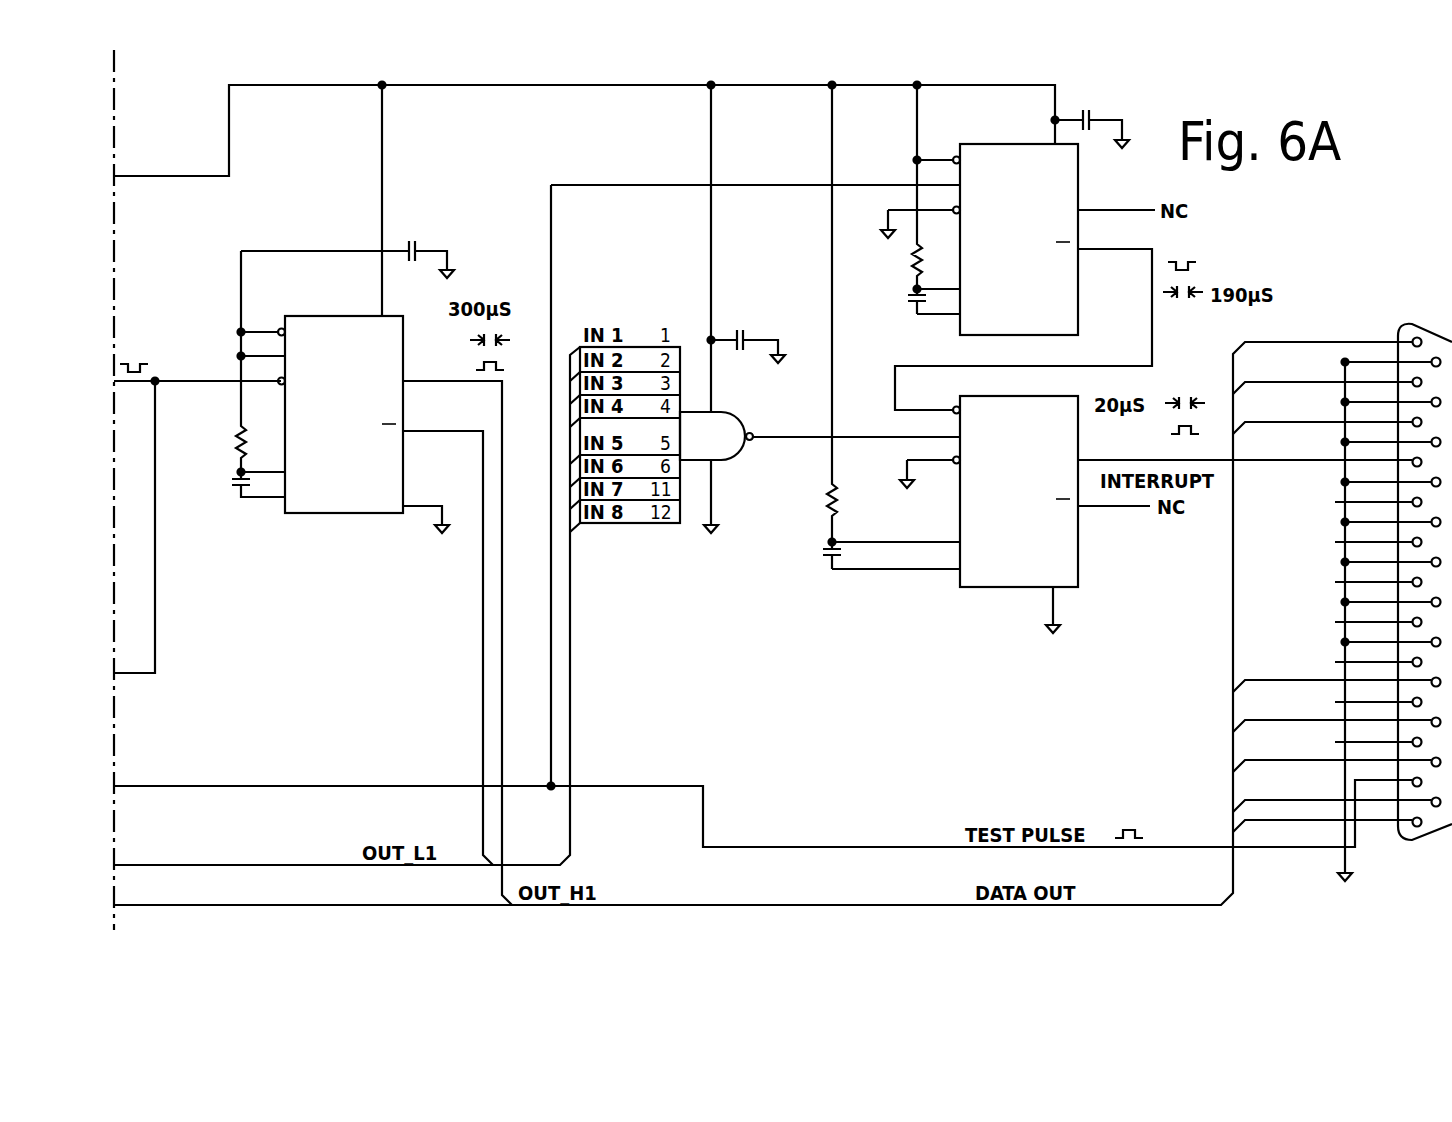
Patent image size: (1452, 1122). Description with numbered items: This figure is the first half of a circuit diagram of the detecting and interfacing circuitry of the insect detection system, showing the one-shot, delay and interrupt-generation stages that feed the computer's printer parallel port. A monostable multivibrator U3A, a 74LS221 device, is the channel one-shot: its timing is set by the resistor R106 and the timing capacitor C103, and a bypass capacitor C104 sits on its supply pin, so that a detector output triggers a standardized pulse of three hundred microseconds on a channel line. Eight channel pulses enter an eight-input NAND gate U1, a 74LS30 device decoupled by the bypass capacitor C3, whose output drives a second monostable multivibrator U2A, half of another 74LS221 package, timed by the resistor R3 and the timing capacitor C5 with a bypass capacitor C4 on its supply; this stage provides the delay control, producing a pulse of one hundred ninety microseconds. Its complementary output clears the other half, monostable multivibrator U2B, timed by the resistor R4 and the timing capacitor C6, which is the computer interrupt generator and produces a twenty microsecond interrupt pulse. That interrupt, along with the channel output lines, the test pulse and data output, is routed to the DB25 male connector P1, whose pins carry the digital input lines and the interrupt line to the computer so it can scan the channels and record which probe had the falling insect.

The 74LS30 eight-input NAND gate U1 is at (729, 436).
The 74LS221 monostable multivibrator (first half) U2A is at (1024, 241).
The 74LS221 monostable multivibrator (second half) U2B is at (1017, 495).
The 74LS221 monostable multivibrator U3A is at (343, 408).
The .1 uF bypass capacitor C3 is at (748, 318).
The .1 uF bypass capacitor C4 is at (1092, 102).
The 1.5 uF timing capacitor C5 is at (880, 319).
The 1.5 uF timing capacitor C6 is at (794, 570).
The 1.5 uF timing capacitor C103 is at (208, 498).
The .1 uF bypass capacitor C104 is at (347, 226).
The 175K timing resistor R3 is at (898, 257).
The 10.2K timing resistor R4 is at (796, 502).
The 274K timing resistor R106 is at (209, 423).
The DB25 male connector P1 is at (1348, 603).